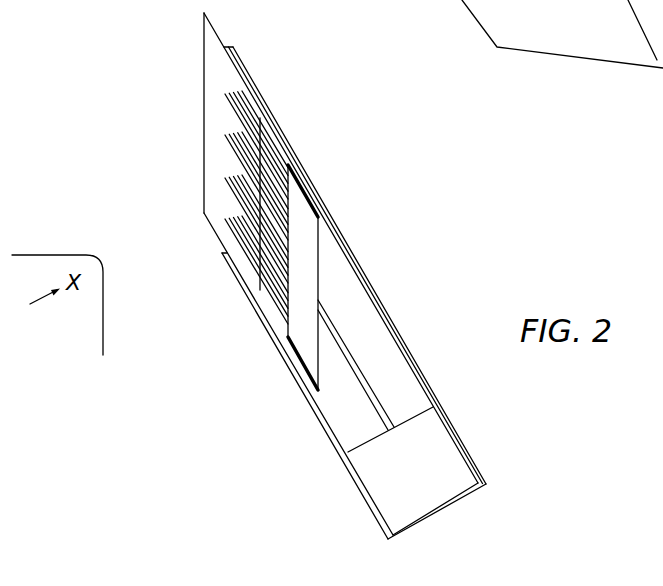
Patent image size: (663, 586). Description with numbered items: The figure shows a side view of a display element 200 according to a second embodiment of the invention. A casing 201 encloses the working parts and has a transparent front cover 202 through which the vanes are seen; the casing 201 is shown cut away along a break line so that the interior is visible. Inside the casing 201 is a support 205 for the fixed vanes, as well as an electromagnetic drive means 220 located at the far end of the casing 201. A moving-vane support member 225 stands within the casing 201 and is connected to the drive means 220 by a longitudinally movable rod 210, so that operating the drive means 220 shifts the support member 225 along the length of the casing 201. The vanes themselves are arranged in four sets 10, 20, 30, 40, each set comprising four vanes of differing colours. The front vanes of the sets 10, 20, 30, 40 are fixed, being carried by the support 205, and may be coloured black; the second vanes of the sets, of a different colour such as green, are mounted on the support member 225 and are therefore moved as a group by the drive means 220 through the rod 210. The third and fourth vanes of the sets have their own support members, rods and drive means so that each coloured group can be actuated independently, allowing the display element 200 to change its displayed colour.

The display element 200 is at (324, 276).
The transparent front cover 202 is at (203, 39).
The casing 201 is at (303, 391).
The support 205 is at (342, 283).
The longitudinally movable rod 210 is at (357, 363).
The electromagnetic drive means 220 is at (433, 442).
The moving-vane support member 225 is at (307, 218).
The vane set 10 is at (214, 210).
The vane set 20 is at (213, 172).
The vane set 30 is at (212, 133).
The vane set 40 is at (214, 101).